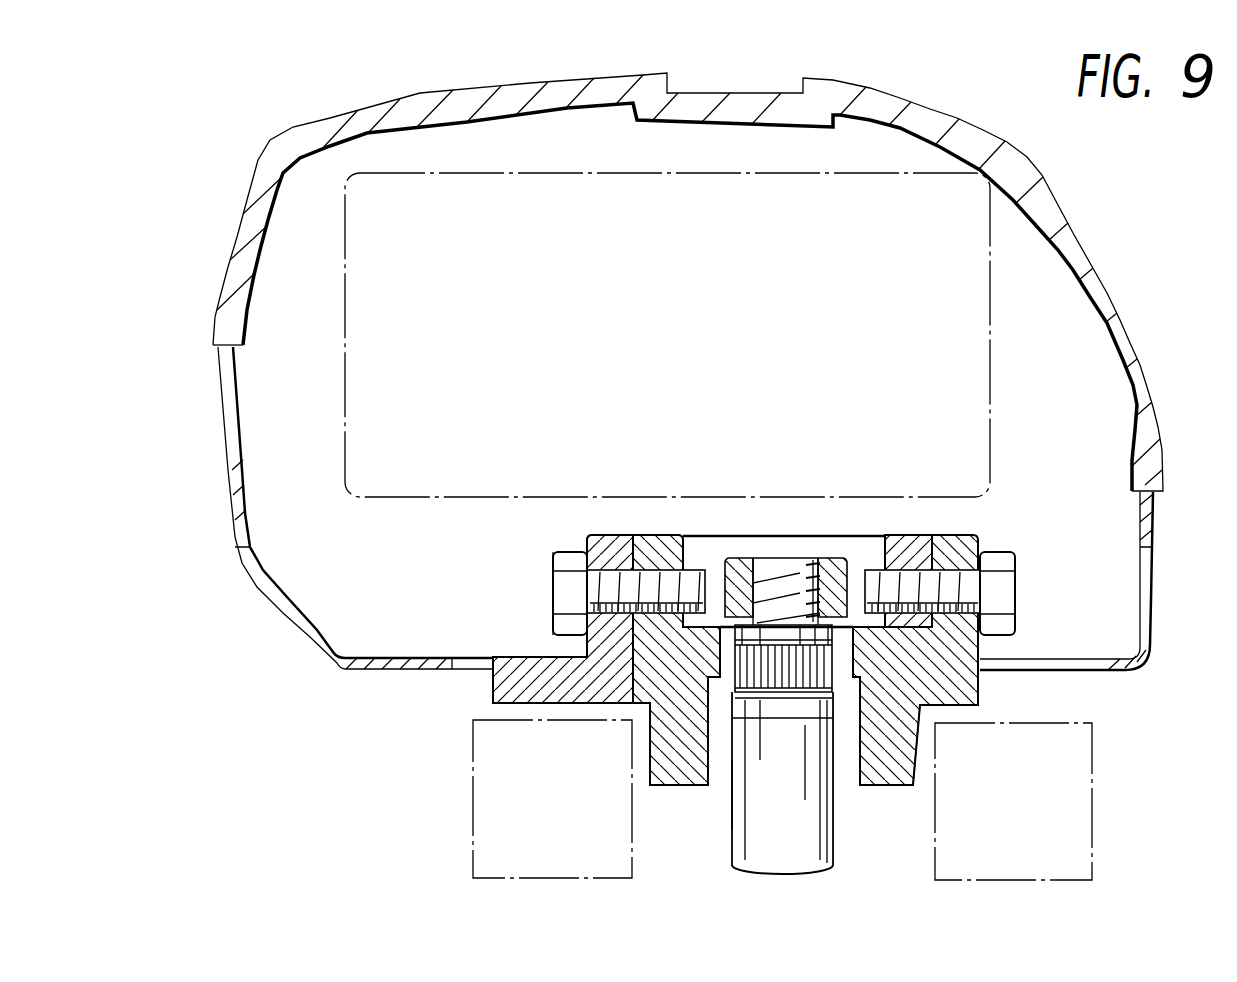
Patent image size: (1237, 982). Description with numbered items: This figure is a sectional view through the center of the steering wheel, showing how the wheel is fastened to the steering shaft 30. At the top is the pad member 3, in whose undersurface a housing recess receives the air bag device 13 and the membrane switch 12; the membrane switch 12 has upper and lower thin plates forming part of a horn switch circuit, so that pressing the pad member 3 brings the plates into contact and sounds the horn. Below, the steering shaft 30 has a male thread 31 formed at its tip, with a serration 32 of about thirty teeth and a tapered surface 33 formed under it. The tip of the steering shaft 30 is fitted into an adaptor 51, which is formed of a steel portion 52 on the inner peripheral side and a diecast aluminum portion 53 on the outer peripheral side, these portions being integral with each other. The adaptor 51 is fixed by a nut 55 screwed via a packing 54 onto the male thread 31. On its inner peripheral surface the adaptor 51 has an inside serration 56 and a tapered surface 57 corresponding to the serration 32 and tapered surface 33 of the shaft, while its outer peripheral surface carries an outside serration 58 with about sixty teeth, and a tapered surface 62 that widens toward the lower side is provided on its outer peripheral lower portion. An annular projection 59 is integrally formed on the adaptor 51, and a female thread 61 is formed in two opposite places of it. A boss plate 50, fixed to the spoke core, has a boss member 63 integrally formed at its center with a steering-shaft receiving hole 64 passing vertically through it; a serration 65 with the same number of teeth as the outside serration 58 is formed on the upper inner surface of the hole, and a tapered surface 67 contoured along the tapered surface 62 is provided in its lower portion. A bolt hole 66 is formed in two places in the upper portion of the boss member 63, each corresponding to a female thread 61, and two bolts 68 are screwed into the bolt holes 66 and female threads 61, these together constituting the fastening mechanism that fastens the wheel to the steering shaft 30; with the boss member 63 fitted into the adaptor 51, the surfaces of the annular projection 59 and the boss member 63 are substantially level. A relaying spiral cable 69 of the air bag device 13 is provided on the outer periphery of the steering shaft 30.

The pad member 3 is at (967, 117).
The membrane switch 12 is at (640, 177).
The air bag device 13 is at (667, 316).
The steering shaft 30 is at (813, 789).
The male thread 31 is at (820, 556).
The serration 32 is at (850, 652).
The tapered surface 33 is at (838, 758).
The boss plate 50 is at (523, 606).
The adaptor 51 is at (682, 794).
The steel portion 52 is at (701, 792).
The aluminum portion 53 is at (657, 787).
The packing 54 is at (707, 556).
The nut 55 is at (740, 556).
The serration (inside serration) 56 is at (752, 680).
The tapered surface 57 is at (747, 770).
The serration (outside serration) 58 is at (1017, 620).
The annular projection 59 is at (915, 534).
The female thread 61 is at (660, 534).
The tapered surface 62 is at (939, 666).
The boss member 63 is at (607, 534).
The steering-shaft receiving hole 64 is at (644, 667).
The serration 65 is at (645, 633).
The bolt hole 66 is at (596, 604).
The tapered surface 67 is at (933, 673).
The bolts 68 is at (560, 603).
The relaying spiral cable 69 is at (473, 793).